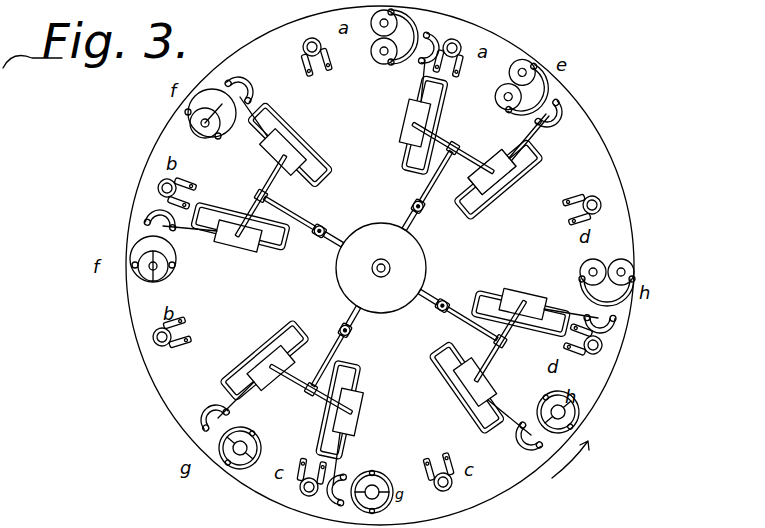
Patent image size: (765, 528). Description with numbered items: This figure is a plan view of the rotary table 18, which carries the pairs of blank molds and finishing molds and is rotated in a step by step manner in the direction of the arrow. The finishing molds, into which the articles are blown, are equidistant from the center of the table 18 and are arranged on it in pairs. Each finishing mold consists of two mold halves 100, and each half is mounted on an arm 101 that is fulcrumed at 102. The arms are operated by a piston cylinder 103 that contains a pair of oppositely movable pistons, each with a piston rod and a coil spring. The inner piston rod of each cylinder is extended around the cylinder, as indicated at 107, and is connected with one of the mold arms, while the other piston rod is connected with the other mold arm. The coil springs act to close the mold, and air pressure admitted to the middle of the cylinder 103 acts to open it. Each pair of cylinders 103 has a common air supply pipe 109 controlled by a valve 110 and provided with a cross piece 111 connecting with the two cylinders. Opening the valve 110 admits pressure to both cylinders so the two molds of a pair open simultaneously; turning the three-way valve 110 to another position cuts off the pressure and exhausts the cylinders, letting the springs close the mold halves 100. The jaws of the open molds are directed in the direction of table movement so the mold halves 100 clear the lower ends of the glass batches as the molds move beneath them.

The rotary table 18 is at (613, 241).
The mold halves 100 is at (517, 64).
The arm 101 is at (521, 103).
The fulcrum 102 is at (548, 108).
The piston cylinder 103 is at (403, 121).
The extension of inner piston rod 107 is at (521, 169).
The common air supply pipe 109 is at (431, 193).
The valve 110 is at (413, 205).
The cross piece 111 is at (416, 122).